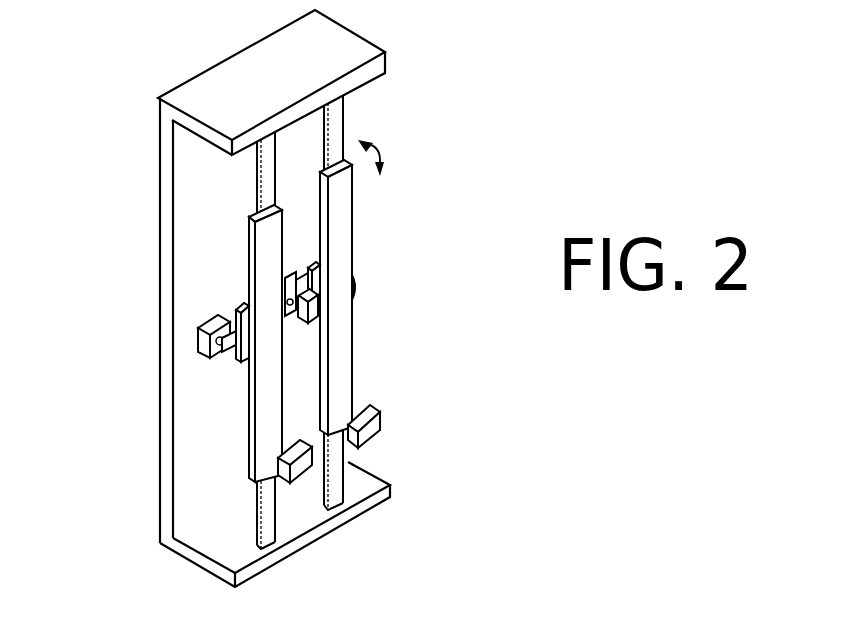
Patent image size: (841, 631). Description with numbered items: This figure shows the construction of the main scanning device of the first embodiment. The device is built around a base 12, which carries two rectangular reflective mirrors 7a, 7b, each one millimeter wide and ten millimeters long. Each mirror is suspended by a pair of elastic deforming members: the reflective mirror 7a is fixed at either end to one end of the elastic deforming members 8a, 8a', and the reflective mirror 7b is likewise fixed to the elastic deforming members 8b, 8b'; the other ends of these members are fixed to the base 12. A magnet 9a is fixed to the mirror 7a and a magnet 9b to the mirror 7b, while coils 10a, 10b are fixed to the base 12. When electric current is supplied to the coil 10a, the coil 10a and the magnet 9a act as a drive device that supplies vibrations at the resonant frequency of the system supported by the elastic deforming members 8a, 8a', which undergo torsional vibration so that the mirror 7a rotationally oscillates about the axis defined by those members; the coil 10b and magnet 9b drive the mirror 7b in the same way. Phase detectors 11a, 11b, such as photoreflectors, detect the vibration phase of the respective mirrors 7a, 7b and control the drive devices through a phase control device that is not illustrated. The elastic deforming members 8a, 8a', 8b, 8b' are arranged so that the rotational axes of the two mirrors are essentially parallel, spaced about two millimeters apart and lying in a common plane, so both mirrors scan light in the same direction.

The base 12 is at (263, 58).
The elastic deforming member 8a is at (391, 124).
The elastic deforming member 8a' is at (393, 470).
The elastic deforming member 8b is at (172, 179).
The elastic deforming member 8b' is at (189, 542).
The reflective mirror 7a is at (340, 373).
The reflective mirror 7b is at (265, 408).
The magnet 9a is at (358, 288).
The magnet 9b is at (232, 358).
The coil 10a is at (287, 275).
The coil 10b is at (250, 308).
The phase detector 11a is at (380, 428).
The phase detector 11b is at (280, 464).